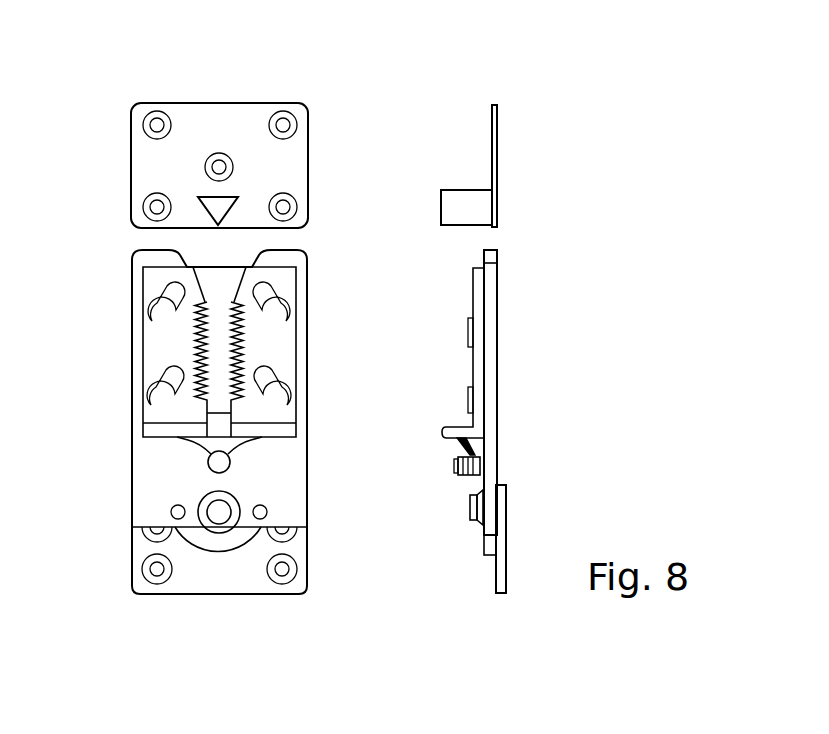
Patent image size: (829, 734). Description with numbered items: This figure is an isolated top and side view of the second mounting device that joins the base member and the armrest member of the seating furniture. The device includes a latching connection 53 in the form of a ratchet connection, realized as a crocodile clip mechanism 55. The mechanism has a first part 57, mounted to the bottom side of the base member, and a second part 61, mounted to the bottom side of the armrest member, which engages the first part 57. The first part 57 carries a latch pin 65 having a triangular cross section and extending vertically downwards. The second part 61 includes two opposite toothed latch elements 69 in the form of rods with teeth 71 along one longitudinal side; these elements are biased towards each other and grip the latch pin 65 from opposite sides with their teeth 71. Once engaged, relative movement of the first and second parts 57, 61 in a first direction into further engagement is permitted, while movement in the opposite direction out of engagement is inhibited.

The latching connection 53 is at (123, 103).
The crocodile clip mechanism 55 is at (263, 133).
The first part 57 is at (183, 175).
The latch pin 65 is at (218, 207).
The toothed latch elements 69 is at (248, 287).
The teeth 71 is at (235, 363).
The second part 61 is at (183, 473).